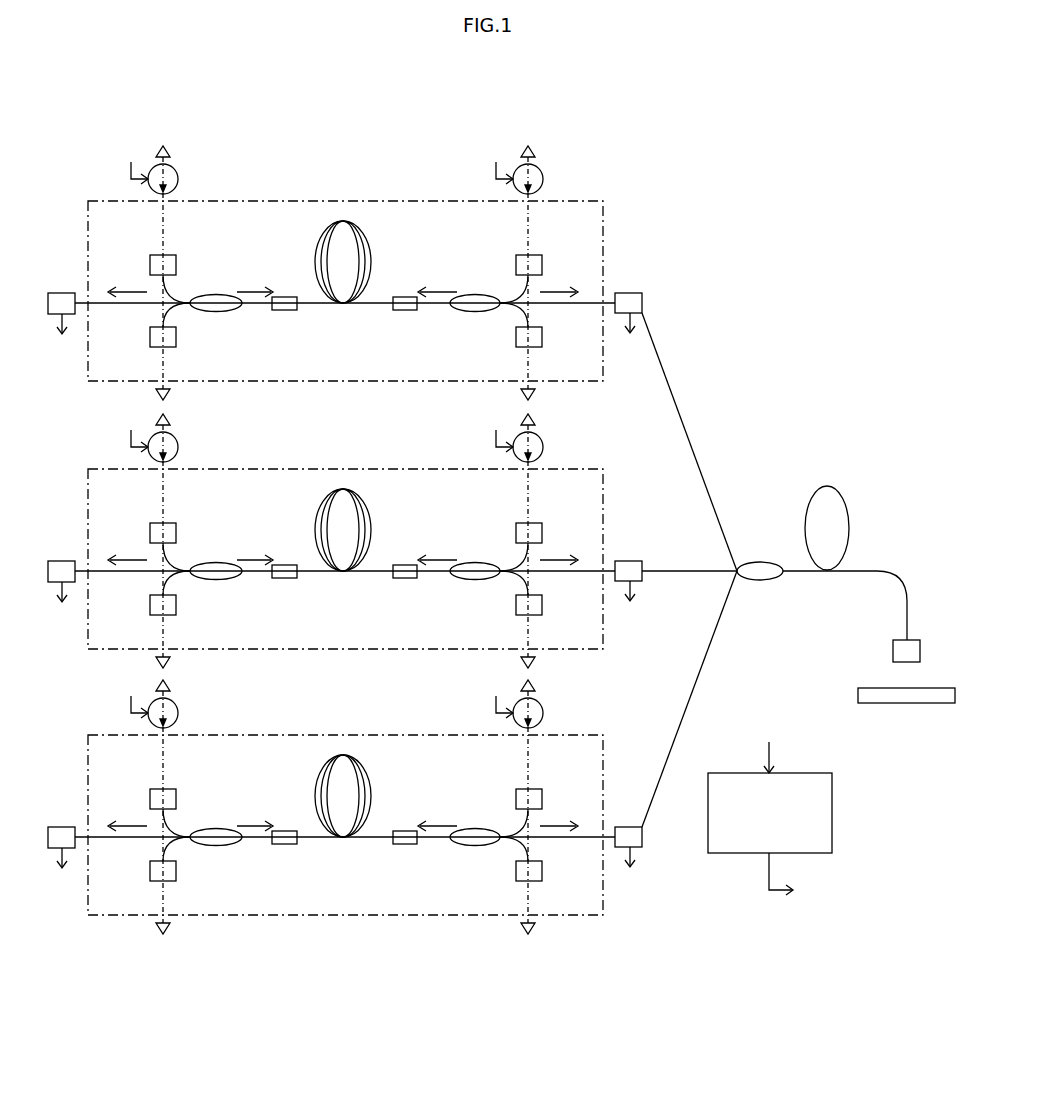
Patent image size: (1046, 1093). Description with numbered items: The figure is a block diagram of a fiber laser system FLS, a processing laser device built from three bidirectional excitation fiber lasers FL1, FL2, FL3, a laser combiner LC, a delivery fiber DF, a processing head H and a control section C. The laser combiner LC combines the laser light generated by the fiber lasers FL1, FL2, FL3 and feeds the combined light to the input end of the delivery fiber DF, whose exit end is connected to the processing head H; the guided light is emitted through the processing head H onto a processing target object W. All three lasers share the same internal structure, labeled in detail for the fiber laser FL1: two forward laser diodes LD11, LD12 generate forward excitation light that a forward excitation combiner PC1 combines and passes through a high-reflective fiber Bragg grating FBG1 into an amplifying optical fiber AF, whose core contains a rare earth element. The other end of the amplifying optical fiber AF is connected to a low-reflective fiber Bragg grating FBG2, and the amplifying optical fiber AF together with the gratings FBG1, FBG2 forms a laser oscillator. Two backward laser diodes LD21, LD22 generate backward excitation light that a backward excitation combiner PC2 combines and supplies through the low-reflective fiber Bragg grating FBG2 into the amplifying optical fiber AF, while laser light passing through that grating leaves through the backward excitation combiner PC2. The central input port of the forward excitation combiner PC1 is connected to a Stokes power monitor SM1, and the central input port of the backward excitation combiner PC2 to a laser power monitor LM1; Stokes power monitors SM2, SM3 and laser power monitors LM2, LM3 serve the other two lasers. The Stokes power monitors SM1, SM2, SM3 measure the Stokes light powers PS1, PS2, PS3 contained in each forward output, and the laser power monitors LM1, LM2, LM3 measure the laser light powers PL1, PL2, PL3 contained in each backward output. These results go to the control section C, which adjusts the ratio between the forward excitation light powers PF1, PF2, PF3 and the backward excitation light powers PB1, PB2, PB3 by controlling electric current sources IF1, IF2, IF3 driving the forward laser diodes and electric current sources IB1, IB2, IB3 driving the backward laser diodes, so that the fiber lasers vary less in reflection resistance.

The fiber laser system FLS is at (905, 122).
The fiber laser FL1 is at (597, 236).
The fiber laser FL2 is at (597, 504).
The fiber laser FL3 is at (597, 770).
The electric current source IF1 is at (178, 179).
The electric current source IF2 is at (178, 447).
The electric current source IF3 is at (178, 713).
The electric current source IB1 is at (543, 179).
The electric current source IB2 is at (543, 447).
The electric current source IB3 is at (543, 713).
The forward laser diode LD11 is at (173, 255).
The forward laser diode LD12 is at (152, 347).
The backward laser diode LD21 is at (516, 257).
The backward laser diode LD22 is at (541, 347).
The forward excitation combiner PC1 is at (216, 312).
The backward excitation combiner PC2 is at (475, 312).
The high-reflective fiber Bragg grating FBG1 is at (286, 310).
The low-reflective fiber Bragg grating FBG2 is at (405, 310).
The amplifying optical fiber AF is at (370, 240).
The Stokes light power PS1 is at (127, 278).
The Stokes light power PS2 is at (127, 546).
The Stokes light power PS3 is at (127, 812).
The forward excitation light power PF1 is at (255, 278).
The forward excitation light power PF2 is at (255, 546).
The forward excitation light power PF3 is at (255, 812).
The backward excitation light power PB1 is at (437, 278).
The backward excitation light power PB2 is at (437, 546).
The backward excitation light power PB3 is at (437, 812).
The laser light power PL1 is at (560, 278).
The laser light power PL2 is at (560, 546).
The laser light power PL3 is at (560, 812).
The Stokes power monitor SM1 is at (62, 293).
The Stokes power monitor SM2 is at (62, 561).
The Stokes power monitor SM3 is at (62, 827).
The laser power monitor LM1 is at (628, 293).
The laser power monitor LM2 is at (628, 561).
The laser power monitor LM3 is at (628, 827).
The laser combiner LC is at (760, 562).
The delivery fiber DF is at (849, 527).
The processing head H is at (893, 651).
The processing target object W is at (908, 703).
The control section C is at (832, 810).